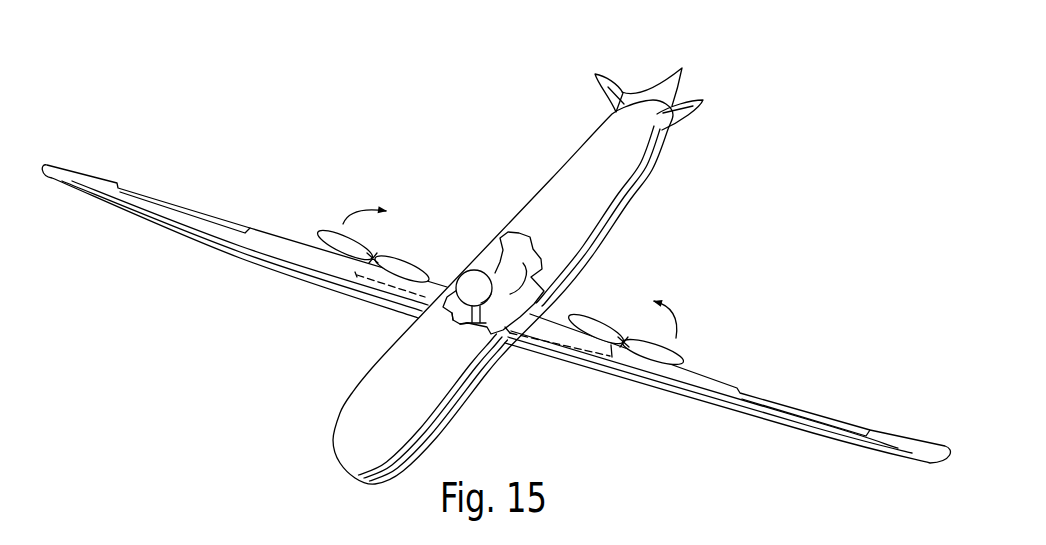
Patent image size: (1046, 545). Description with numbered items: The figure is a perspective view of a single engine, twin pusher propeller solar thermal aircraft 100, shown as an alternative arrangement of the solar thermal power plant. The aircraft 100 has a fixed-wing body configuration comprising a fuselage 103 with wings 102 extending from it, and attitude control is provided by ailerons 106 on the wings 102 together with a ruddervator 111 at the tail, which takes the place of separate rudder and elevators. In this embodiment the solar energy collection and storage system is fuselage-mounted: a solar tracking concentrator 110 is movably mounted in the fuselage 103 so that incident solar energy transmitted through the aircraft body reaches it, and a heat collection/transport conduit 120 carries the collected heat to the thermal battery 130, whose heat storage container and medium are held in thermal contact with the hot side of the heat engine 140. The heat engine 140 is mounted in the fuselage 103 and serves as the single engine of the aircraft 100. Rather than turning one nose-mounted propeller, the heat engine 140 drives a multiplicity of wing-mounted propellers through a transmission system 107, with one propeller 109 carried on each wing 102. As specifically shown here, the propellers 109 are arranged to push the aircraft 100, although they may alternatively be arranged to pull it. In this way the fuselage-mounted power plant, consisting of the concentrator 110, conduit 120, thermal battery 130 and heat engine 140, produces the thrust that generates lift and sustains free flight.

The aircraft 100 is at (766, 128).
The wings 102 is at (100, 181).
The fuselage 103 is at (535, 196).
The ailerons 106 is at (788, 402).
The transmission system 107 is at (476, 330).
The propeller 109 is at (417, 268).
The solar tracking concentrator 110 is at (528, 261).
The ruddervator 111 is at (683, 67).
The heat collection/transport conduit 120 is at (510, 260).
The thermal battery 130 is at (470, 292).
The heat engine 140 is at (465, 318).